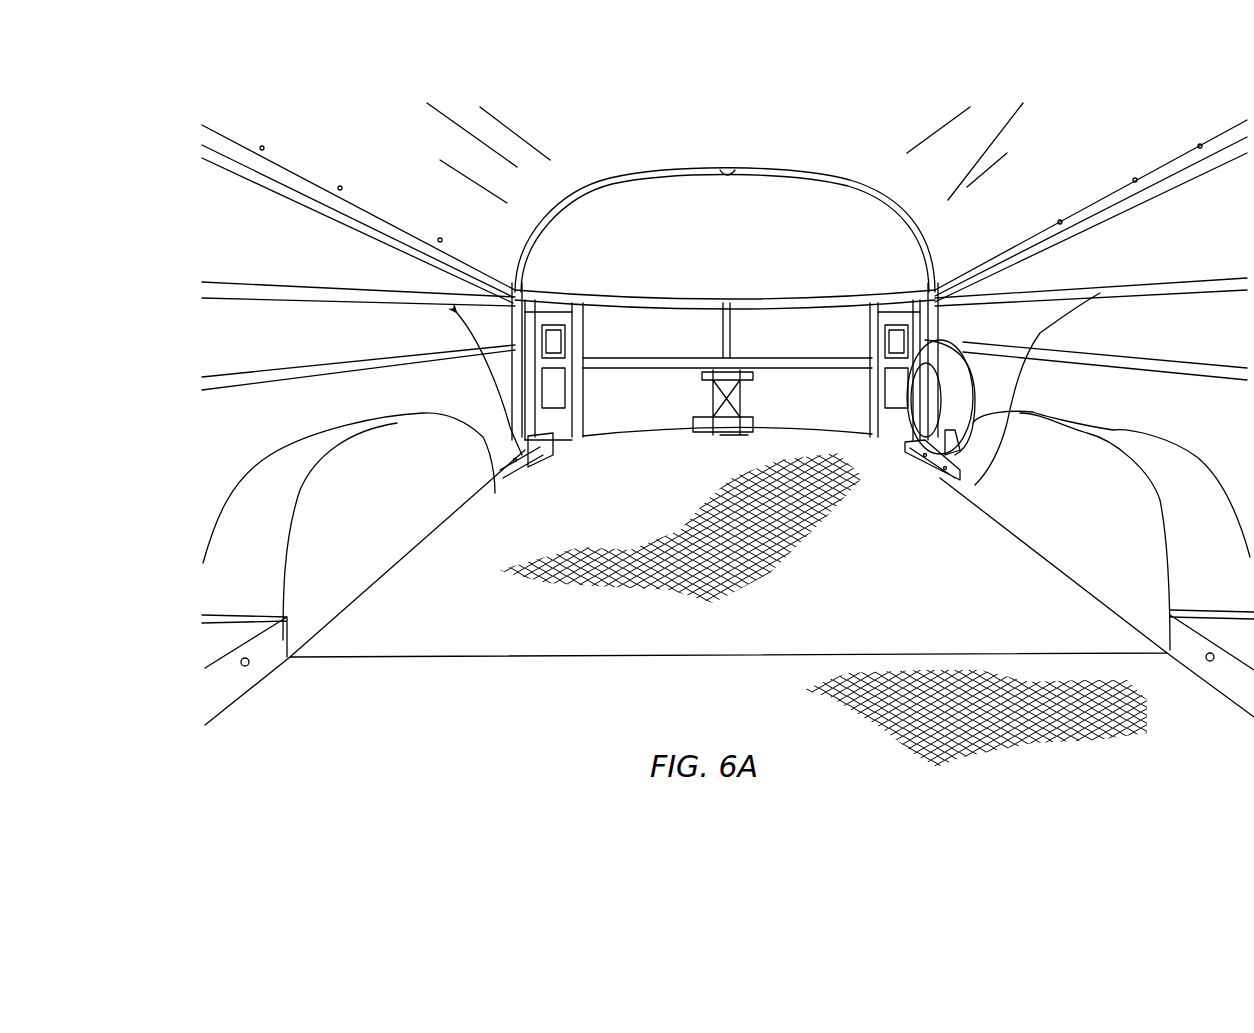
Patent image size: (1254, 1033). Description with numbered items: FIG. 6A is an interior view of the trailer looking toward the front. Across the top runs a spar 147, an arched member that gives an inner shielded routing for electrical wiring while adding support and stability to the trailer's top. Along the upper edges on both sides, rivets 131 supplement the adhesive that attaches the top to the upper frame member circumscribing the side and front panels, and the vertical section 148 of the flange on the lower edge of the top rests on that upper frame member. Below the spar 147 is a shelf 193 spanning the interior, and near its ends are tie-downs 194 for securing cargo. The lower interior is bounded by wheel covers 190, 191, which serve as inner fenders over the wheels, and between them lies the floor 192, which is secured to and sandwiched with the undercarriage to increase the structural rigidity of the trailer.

The rivets 131 is at (232, 147).
The vertical section 148 is at (1127, 172).
The spars 147 is at (583, 210).
The shelf 193 is at (793, 346).
The tie-downs 194 is at (527, 458).
The wheel cover 190 is at (400, 527).
The wheel cover 191 is at (1112, 532).
The floor 192 is at (520, 712).